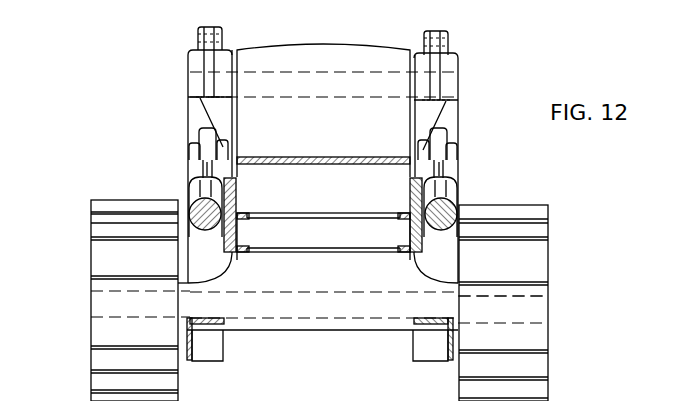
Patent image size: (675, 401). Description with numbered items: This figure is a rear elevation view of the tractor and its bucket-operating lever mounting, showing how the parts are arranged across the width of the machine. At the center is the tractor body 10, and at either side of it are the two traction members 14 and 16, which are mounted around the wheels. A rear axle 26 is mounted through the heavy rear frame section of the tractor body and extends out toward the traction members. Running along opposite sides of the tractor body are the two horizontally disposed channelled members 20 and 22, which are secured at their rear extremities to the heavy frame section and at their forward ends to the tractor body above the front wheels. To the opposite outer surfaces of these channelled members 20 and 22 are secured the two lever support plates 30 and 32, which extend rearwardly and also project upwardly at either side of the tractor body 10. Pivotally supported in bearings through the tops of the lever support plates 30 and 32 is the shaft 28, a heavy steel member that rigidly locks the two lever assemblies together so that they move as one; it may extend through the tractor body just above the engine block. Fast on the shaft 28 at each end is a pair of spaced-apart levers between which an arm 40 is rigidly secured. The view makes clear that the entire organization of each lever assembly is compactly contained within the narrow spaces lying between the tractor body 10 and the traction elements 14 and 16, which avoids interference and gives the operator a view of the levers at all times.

The tractor body 10 is at (285, 48).
The traction member 14 is at (548, 239).
The traction member 16 is at (92, 262).
The channelled member 20 is at (323, 204).
The channelled member 22 is at (400, 236).
The rear axle 26 is at (552, 296).
The shaft 28 is at (338, 72).
The lever support plate 30 is at (231, 49).
The lever support plate 32 is at (412, 53).
The arm 40 is at (448, 41).